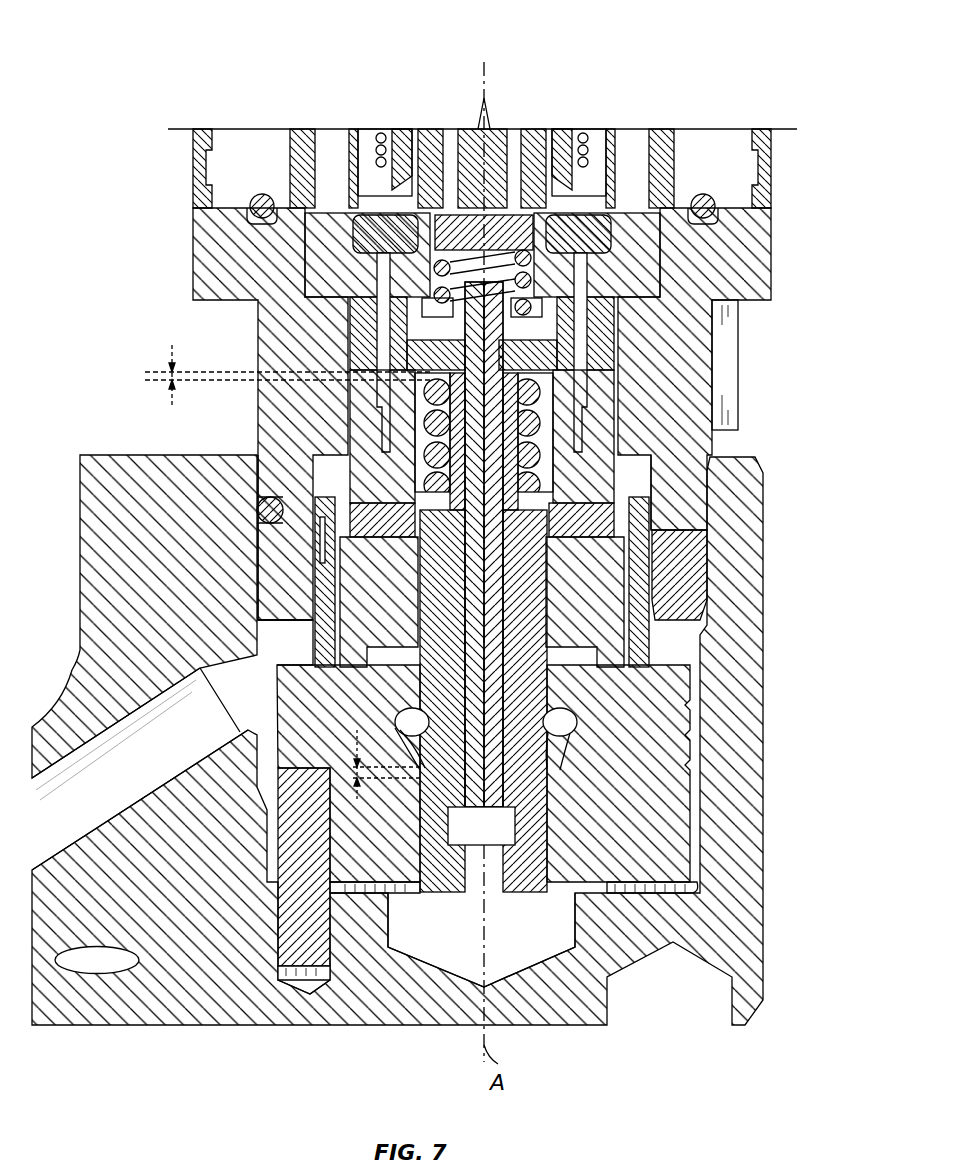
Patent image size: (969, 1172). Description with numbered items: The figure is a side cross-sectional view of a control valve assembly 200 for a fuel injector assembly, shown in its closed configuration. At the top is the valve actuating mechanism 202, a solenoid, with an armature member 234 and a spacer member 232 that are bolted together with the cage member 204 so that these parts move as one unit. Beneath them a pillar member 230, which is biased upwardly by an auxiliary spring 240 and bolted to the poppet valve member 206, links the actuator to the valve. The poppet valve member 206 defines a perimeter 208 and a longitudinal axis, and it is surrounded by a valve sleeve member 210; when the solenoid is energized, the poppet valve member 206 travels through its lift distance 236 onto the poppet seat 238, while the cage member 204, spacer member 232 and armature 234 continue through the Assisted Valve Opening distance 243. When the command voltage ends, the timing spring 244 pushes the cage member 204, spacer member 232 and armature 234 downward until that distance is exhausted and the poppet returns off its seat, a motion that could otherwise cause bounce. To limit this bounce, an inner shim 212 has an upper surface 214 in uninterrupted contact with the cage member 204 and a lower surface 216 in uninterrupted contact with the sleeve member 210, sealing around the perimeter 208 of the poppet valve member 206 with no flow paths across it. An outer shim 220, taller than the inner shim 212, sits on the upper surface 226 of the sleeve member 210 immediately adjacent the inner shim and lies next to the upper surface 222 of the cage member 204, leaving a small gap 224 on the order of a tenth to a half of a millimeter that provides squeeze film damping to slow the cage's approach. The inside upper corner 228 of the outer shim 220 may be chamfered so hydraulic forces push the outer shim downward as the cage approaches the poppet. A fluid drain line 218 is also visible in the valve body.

The control valve assembly 200 is at (140, 42).
The valve actuating mechanism 202 is at (628, 250).
The cage member 204 is at (600, 495).
The poppet valve member 206 is at (620, 700).
The perimeter 208 is at (530, 660).
The valve sleeve member 210 is at (648, 865).
The inner shim 212 is at (655, 625).
The upper surface 214 is at (340, 637).
The lower surface 216 is at (430, 705).
The fluid drain line 218 is at (160, 765).
The outer shim 220 is at (650, 592).
The upper surface 222 is at (395, 517).
The gap 224 is at (395, 492).
The upper surface 226 is at (358, 505).
The inside upper corner 228 is at (575, 520).
The pillar member 230 is at (535, 360).
The spacer member 232 is at (350, 318).
The armature member 234 is at (362, 283).
The lift distance 236 is at (425, 835).
The poppet seat 238 is at (415, 760).
The auxiliary spring 240 is at (545, 445).
The Assisted Valve Opening distance 243 is at (172, 356).
The timing spring 244 is at (522, 257).